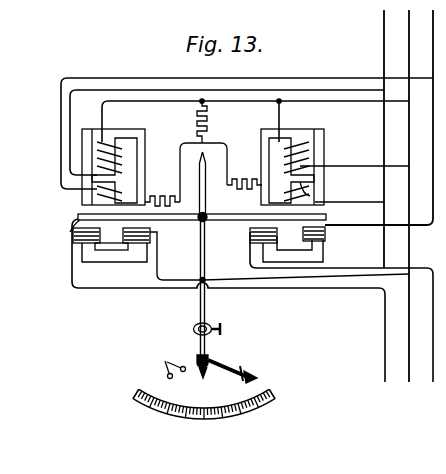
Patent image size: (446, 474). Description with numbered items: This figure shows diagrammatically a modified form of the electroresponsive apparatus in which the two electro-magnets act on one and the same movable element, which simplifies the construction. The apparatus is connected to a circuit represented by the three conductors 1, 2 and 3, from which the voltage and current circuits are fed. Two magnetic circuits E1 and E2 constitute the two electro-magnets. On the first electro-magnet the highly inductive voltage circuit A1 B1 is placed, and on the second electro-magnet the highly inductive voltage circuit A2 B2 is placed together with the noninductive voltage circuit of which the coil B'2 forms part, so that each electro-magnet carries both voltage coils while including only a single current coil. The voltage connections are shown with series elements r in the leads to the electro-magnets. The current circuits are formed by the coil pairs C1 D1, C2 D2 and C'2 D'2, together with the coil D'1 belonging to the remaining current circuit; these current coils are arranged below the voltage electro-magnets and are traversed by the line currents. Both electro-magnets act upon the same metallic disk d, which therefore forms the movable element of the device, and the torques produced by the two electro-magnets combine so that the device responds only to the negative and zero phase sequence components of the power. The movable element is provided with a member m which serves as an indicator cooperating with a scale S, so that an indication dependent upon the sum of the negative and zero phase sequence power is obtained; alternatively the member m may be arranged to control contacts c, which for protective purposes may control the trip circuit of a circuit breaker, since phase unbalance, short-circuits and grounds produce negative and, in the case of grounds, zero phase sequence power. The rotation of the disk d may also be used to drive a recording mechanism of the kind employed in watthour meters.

The supply conductor 1 is at (384, 41).
The supply conductor 2 is at (409, 42).
The supply conductor 3 is at (433, 42).
The magnetic circuit E1 is at (245, 165).
The magnetic circuit E2 is at (108, 262).
The highly inductive voltage circuit coil A1 is at (96, 146).
The highly inductive voltage circuit coil B1 is at (97, 190).
The highly inductive voltage circuit coil A2 is at (297, 156).
The highly inductive voltage circuit coil B2 is at (289, 190).
The noninductive voltage circuit coil B'2 is at (323, 193).
The resistance r is at (208, 123).
The metallic disk d is at (185, 225).
The current circuit coil C1 is at (218, 300).
The current circuit coil C2 is at (332, 304).
The current circuit coil C'2 is at (236, 246).
The current circuit coil D1 is at (137, 253).
The current circuit coil D'1 is at (163, 246).
The current circuit coil D2 is at (321, 228).
The current circuit coil D'2 is at (335, 239).
The contacts c is at (172, 364).
The member m is at (229, 370).
The scale S is at (199, 419).